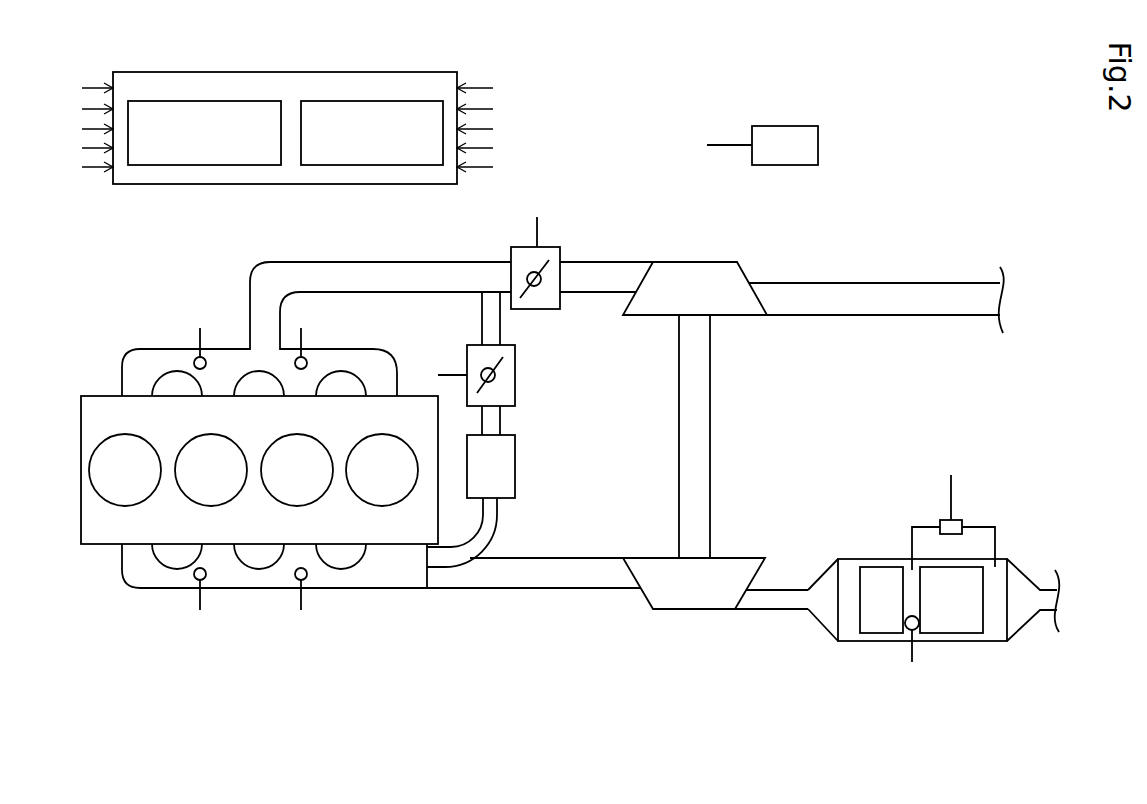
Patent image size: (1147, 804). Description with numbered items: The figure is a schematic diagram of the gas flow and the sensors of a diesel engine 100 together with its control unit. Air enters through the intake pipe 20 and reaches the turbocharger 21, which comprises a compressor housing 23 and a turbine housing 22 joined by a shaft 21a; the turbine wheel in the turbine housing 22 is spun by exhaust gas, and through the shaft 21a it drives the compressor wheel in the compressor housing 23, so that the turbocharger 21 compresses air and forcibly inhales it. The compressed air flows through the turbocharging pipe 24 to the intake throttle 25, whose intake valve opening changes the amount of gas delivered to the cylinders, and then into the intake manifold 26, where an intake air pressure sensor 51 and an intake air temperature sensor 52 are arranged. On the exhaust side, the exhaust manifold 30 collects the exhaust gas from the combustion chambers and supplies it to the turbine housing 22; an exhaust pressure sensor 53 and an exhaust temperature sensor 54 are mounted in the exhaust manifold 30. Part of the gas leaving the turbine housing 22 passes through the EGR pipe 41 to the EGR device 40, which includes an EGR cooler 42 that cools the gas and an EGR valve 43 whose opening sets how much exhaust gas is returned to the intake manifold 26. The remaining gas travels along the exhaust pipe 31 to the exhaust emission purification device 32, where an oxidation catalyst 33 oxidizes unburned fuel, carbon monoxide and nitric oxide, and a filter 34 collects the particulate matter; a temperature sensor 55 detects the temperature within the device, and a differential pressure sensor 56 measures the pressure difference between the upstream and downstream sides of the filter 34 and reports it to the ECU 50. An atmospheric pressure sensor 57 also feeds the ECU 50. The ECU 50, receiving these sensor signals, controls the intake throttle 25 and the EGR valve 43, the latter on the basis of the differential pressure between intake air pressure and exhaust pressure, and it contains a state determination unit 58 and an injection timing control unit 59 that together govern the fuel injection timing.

The engine 100 is at (56, 135).
The ECU 50 is at (287, 142).
The state determination unit 58 is at (233, 165).
The injection timing control unit 59 is at (323, 165).
The atmospheric pressure sensor 57 is at (790, 135).
The intake pipe 20 is at (871, 295).
The turbocharger 21 is at (746, 436).
The shaft 21a is at (702, 422).
The turbine housing 22 is at (698, 600).
The compressor housing 23 is at (697, 268).
The turbocharging pipe 24 is at (603, 272).
The intake throttle 25 is at (520, 245).
The intake manifold 26 is at (388, 378).
The exhaust manifold 30 is at (403, 583).
The exhaust pipe 31 is at (787, 600).
The exhaust emission purification device 32 is at (947, 593).
The oxidation catalyst 33 is at (882, 627).
The filter 34 is at (973, 627).
The EGR device 40 is at (540, 429).
The EGR pipe 41 is at (490, 527).
The EGR cooler 42 is at (510, 468).
The EGR valve 43 is at (508, 390).
The intake air pressure sensor 51 is at (194, 366).
The intake air temperature sensor 52 is at (308, 364).
The exhaust pressure sensor 53 is at (194, 573).
The exhaust temperature sensor 54 is at (308, 573).
The temperature sensor 55 is at (922, 627).
The differential pressure sensor 56 is at (957, 520).